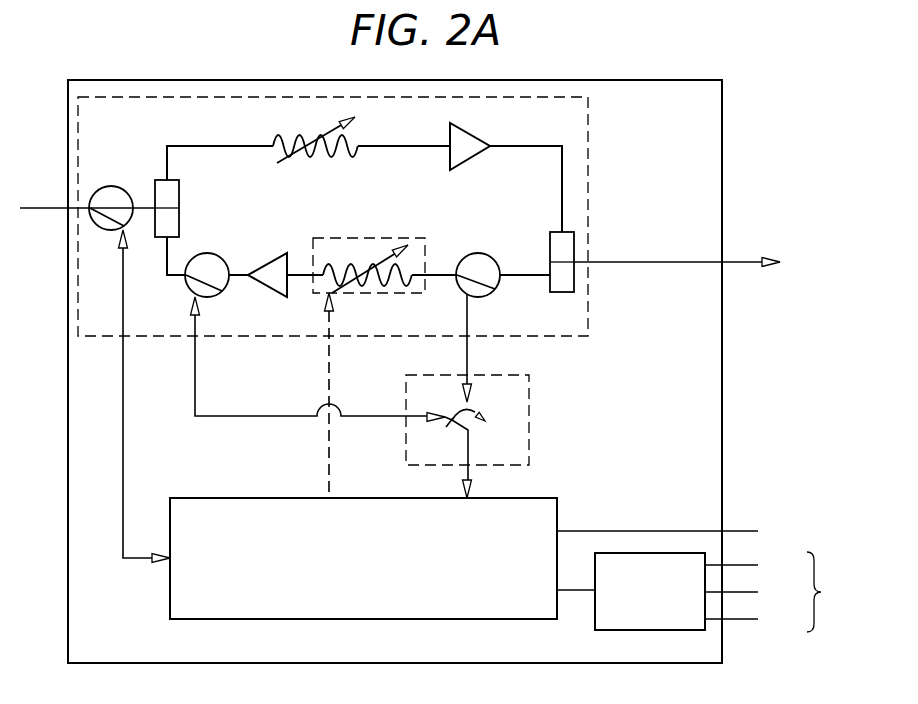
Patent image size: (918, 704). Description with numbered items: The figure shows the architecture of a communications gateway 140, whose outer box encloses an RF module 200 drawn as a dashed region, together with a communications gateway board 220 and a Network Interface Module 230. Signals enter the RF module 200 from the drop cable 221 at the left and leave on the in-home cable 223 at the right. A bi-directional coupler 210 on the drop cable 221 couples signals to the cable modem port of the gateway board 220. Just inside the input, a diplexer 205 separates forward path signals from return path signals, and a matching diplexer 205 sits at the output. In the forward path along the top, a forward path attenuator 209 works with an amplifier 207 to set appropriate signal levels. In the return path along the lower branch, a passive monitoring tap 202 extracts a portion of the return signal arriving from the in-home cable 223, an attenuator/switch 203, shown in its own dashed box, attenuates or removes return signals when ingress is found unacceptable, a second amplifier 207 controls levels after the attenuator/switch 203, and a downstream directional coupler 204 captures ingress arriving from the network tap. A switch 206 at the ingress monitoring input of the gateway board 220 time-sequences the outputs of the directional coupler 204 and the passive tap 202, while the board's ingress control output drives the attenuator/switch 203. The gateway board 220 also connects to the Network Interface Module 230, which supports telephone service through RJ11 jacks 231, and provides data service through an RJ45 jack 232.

The communications gateway 140 is at (722, 128).
The RF module 200 is at (588, 155).
The passive monitoring tap 202 is at (489, 254).
The attenuator/switch 203 is at (338, 238).
The downstream directional coupler 204 is at (190, 289).
The diplexer 205 is at (179, 197).
The switch 206 is at (531, 403).
The amplifier 207 is at (466, 162).
The forward path attenuator 209 is at (349, 157).
The bi-directional coupler 210 is at (128, 190).
The communications gateway board 220 is at (538, 498).
The drop cable 221 is at (35, 208).
The in-home cable 223 is at (738, 262).
The Network Interface Module 230 is at (615, 631).
The RJ11 jacks 231 is at (786, 592).
The RJ45 jack 232 is at (801, 524).